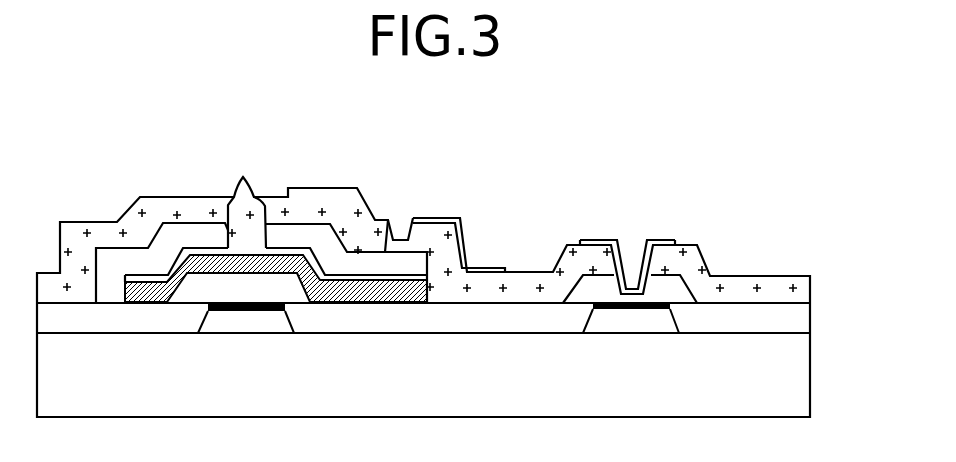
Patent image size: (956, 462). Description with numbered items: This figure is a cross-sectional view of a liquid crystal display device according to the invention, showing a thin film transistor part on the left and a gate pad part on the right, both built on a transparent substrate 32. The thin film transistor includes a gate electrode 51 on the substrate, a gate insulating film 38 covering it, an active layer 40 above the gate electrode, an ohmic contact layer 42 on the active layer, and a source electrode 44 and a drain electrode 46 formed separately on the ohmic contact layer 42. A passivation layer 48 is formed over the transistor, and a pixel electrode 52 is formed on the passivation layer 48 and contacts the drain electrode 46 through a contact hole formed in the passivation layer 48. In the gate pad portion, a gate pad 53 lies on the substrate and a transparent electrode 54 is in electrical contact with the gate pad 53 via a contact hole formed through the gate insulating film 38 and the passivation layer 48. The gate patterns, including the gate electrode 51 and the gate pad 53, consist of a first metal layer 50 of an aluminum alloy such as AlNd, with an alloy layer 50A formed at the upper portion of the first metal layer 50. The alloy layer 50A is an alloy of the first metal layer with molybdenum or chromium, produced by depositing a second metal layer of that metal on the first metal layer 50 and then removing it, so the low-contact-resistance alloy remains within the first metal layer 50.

The transparent substrate 32 is at (810, 384).
The gate insulating film 38 is at (810, 318).
The active layer 40 is at (268, 277).
The ohmic contact layer 42 is at (247, 199).
The source electrode 44 is at (176, 248).
The drain electrode 46 is at (332, 227).
The passivation layer 48 is at (810, 285).
The first metal layer 50 is at (288, 326).
The alloy layer 50A is at (212, 313).
The gate electrode 51 is at (243, 336).
The pixel electrode 52 is at (443, 217).
The gate pad 53 is at (628, 336).
The transparent electrode 54 is at (588, 240).